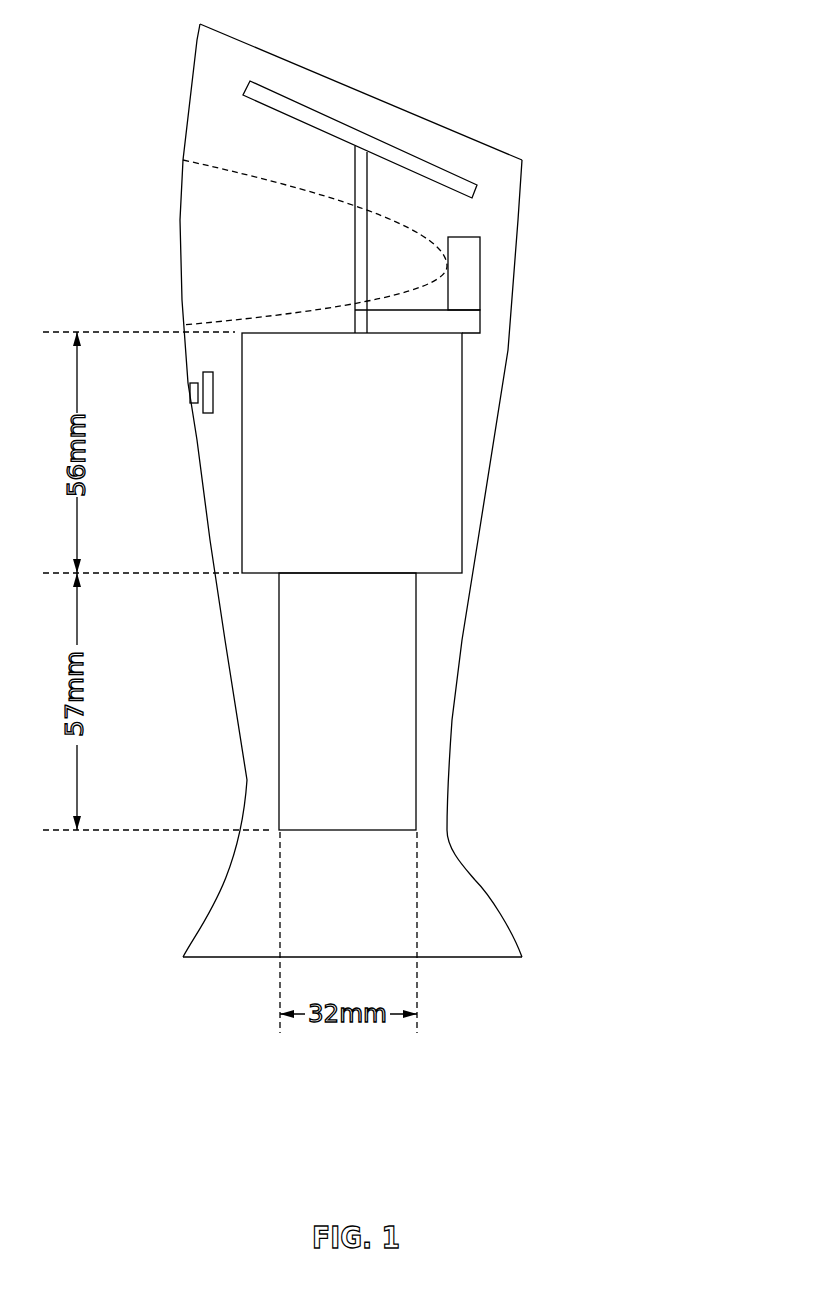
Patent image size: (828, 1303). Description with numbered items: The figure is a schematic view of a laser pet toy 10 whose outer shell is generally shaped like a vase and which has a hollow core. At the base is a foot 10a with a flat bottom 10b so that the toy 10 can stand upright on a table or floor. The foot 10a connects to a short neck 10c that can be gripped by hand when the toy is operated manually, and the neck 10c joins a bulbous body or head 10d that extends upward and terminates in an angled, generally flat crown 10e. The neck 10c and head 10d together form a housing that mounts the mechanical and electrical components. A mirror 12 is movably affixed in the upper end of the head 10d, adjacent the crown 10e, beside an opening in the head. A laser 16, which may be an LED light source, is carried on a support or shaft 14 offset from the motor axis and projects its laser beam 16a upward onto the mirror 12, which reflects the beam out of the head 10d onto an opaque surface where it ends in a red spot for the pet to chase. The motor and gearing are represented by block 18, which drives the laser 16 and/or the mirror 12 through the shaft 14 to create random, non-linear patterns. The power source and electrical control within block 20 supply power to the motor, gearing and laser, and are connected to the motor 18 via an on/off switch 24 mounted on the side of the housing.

The laser pet toy 10 is at (594, 192).
The foot 10a is at (483, 890).
The flat bottom 10b is at (495, 957).
The neck 10c is at (447, 830).
The head 10d is at (520, 232).
The crown 10e is at (505, 152).
The mirror 12 is at (380, 140).
The motor shaft 14 is at (353, 177).
The laser 16 is at (480, 272).
The laser beam 16a is at (285, 180).
The motor and gearing 18 is at (357, 466).
The source of power 20 is at (357, 716).
The on/off switch 24 is at (188, 395).